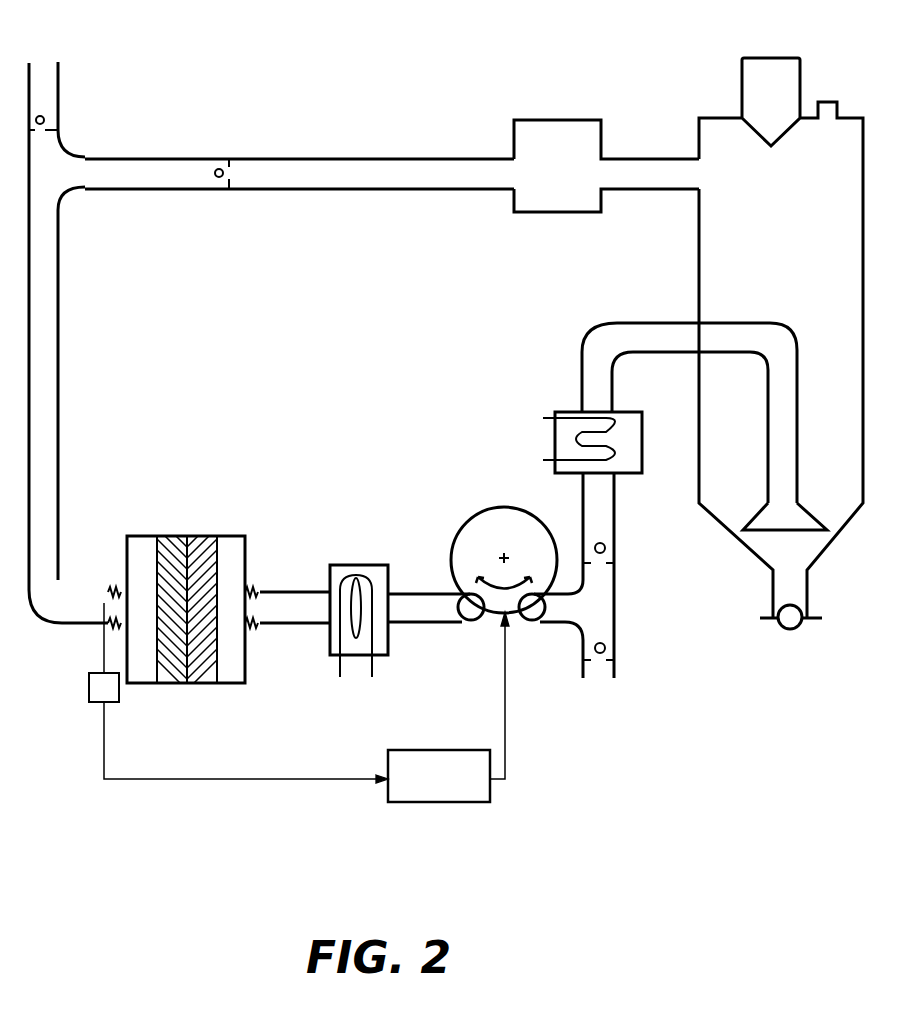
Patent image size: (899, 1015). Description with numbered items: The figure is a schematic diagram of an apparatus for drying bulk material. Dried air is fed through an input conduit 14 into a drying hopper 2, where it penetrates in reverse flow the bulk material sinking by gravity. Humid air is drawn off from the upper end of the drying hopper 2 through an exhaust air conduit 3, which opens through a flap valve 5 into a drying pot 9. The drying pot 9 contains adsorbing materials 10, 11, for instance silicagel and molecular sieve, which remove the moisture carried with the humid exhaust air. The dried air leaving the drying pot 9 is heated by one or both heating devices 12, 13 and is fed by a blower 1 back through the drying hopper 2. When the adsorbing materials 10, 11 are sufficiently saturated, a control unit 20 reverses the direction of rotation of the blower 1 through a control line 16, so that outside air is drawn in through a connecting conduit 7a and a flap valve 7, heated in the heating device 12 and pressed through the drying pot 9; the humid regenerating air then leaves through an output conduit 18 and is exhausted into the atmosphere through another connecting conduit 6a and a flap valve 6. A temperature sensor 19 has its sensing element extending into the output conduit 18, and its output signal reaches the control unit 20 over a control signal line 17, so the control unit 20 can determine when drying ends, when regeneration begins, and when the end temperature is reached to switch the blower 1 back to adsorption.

The blower 1 is at (481, 513).
The drying hopper 2 is at (698, 240).
The exhaust air conduit 3 is at (633, 159).
The flap valve 5 is at (206, 158).
The flap valve 6 is at (58, 128).
The connecting conduit 6a is at (42, 65).
The flap valve 7 is at (615, 633).
The connecting conduit 7a is at (600, 679).
The drying pot 9 is at (245, 672).
The adsorbing material 10 is at (165, 686).
The adsorbing material 11 is at (206, 683).
The heating device 12 is at (354, 567).
The heating device 13 is at (643, 430).
The input conduit 14 is at (661, 331).
The control line 16 is at (506, 737).
The control signal line 17 is at (262, 778).
The output conduit 18 is at (58, 430).
The temperature sensor 19 is at (90, 705).
The control unit 20 is at (436, 805).